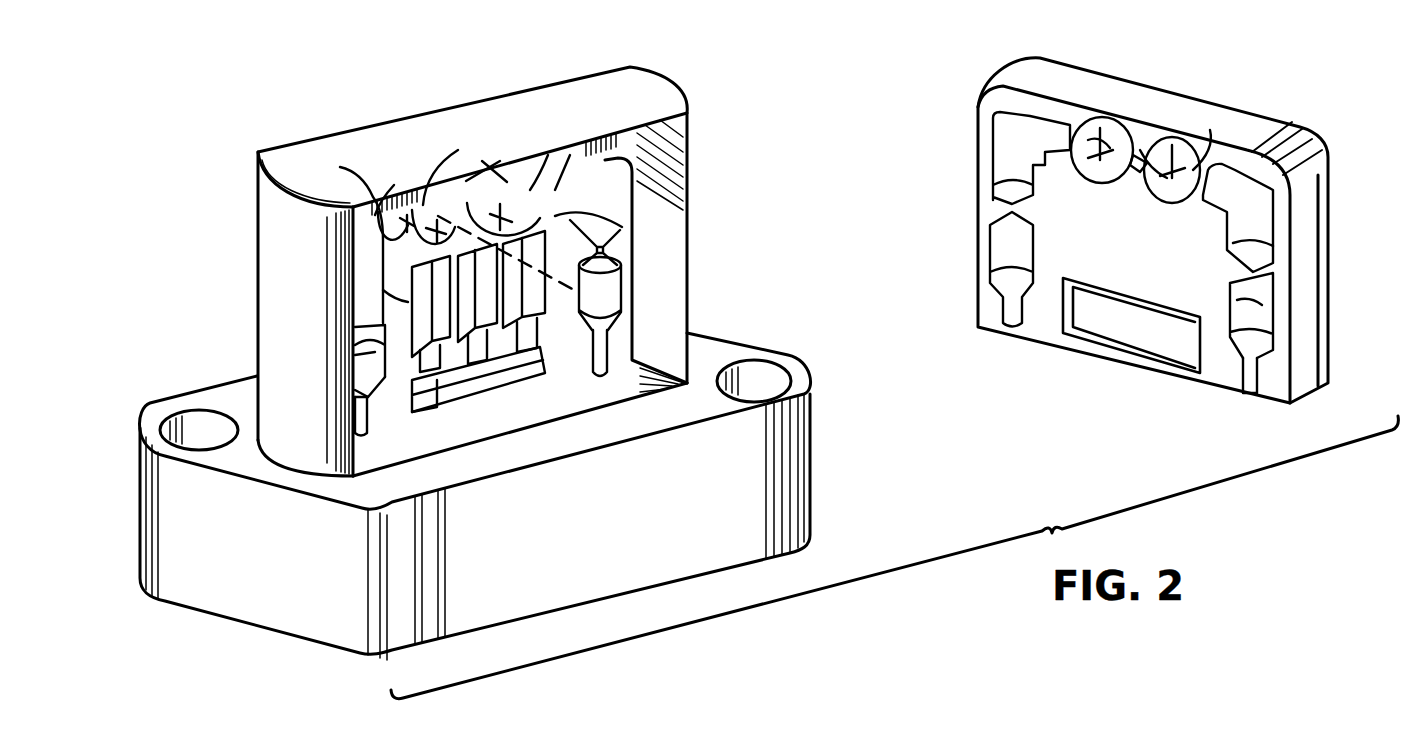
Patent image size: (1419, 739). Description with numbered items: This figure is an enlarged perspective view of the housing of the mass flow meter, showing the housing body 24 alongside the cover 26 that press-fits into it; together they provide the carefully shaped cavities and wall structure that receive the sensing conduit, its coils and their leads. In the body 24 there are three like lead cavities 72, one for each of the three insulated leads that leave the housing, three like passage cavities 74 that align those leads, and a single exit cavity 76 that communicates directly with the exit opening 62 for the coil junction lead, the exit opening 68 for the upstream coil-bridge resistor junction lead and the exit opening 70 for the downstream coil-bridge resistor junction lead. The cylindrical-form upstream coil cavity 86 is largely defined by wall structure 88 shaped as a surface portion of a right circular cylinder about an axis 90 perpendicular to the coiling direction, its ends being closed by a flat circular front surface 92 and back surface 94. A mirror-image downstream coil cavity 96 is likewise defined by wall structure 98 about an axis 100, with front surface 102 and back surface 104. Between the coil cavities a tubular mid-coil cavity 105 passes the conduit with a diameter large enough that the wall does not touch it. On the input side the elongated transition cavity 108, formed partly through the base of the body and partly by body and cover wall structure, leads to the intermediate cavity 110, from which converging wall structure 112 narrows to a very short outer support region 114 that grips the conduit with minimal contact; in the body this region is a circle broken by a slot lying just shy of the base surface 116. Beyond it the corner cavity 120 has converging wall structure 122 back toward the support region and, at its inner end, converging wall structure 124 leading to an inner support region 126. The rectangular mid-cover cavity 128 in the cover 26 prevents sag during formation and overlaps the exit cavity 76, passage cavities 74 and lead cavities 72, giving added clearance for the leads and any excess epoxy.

The body 24 is at (258, 232).
The cover 26 is at (1330, 157).
The exit opening 62 is at (465, 385).
The exit opening 68 is at (447, 372).
The exit opening 70 is at (537, 380).
The lead cavities 72 is at (408, 302).
The passage cavities 74 is at (458, 378).
The exit cavity 76 is at (447, 393).
The upstream coil cavity 86 is at (447, 180).
The wall structure 88 is at (478, 180).
The axis 90 is at (625, 268).
The front surface 92 is at (1195, 170).
The back surface 94 is at (410, 200).
The downstream coil cavity 96 is at (548, 155).
The wall structure 98 is at (570, 155).
The axis 100 is at (552, 197).
The front surface 102 is at (1093, 127).
The back surface 104 is at (514, 185).
The mid-coil cavity 105 is at (345, 236).
The input side transition cavity 108 is at (352, 415).
The input side intermediate cavity 110 is at (345, 378).
The converging wall structure 112 is at (352, 345).
The outer support region 114 is at (360, 313).
The base surface 116 is at (605, 365).
The input side corner cavity 120 is at (370, 255).
The converging wall structure 122 is at (383, 290).
The converging wall structure 124 is at (1293, 122).
The inner support region 126 is at (394, 185).
The mid-cover cavity 128 is at (1140, 328).